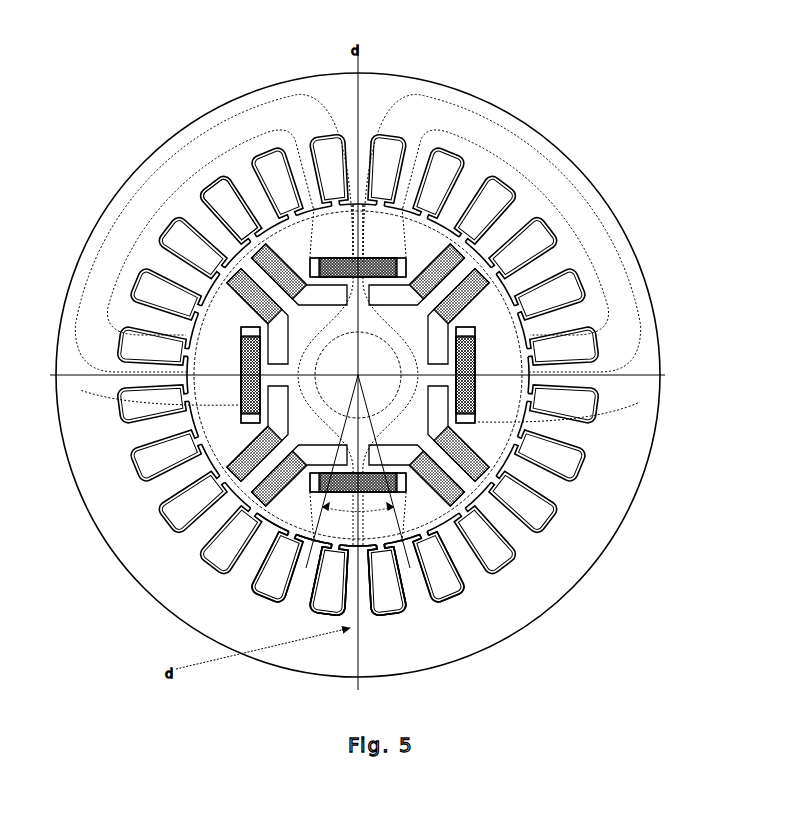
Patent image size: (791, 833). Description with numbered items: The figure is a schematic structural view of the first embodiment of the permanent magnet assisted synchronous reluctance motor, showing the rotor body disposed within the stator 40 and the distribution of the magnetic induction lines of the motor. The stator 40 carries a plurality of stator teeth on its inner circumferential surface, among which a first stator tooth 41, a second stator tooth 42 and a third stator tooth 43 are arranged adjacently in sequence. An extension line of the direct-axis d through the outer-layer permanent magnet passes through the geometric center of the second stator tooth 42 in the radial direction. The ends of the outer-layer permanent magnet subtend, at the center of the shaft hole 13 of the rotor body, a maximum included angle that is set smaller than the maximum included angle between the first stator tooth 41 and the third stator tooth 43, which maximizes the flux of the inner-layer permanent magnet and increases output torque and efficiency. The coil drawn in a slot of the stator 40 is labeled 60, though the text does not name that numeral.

The stator 40 is at (227, 124).
The first stator tooth 41 is at (410, 565).
The second stator tooth 42 is at (362, 575).
The third stator tooth 43 is at (302, 573).
The stator coil 60 is at (222, 205).
The shaft hole 13 is at (494, 130).